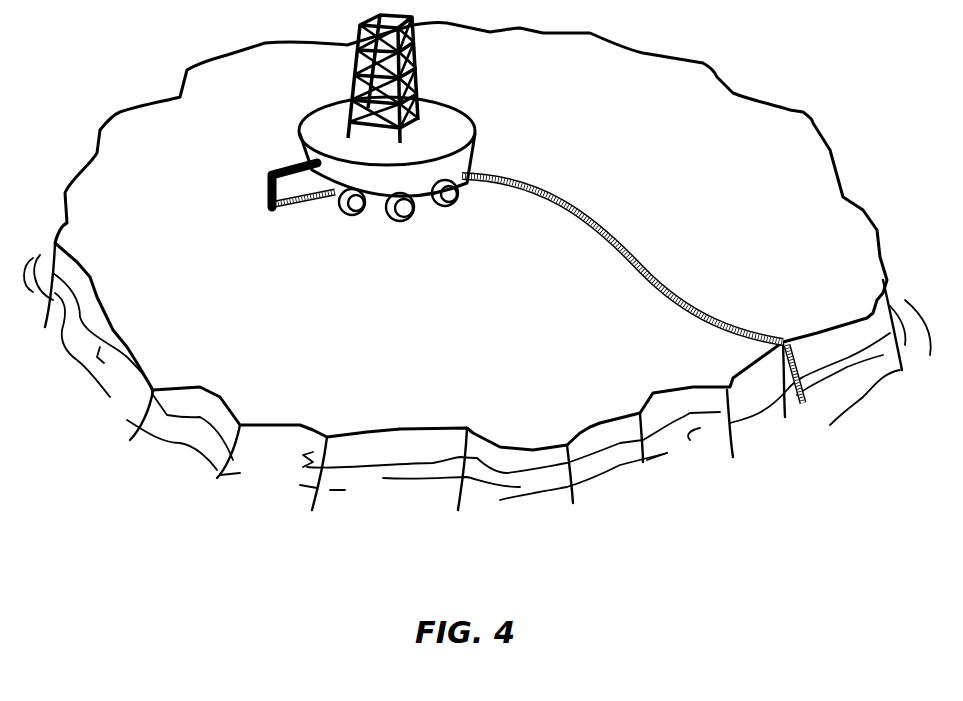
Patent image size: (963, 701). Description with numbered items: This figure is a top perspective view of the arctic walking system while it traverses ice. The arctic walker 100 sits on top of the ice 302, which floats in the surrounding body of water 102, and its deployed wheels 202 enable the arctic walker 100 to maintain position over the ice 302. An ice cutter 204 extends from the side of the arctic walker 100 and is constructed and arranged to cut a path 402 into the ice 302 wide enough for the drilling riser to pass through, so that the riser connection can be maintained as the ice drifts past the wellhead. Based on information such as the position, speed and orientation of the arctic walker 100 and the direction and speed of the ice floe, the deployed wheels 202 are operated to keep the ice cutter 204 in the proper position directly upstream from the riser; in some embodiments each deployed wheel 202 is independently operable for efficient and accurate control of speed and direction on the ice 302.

The arctic walker 100 is at (296, 99).
The body of water 102 is at (693, 503).
The deployed wheels 202 is at (402, 221).
The ice cutter 204 is at (277, 168).
The ice 302 is at (355, 328).
The path 402 is at (585, 215).